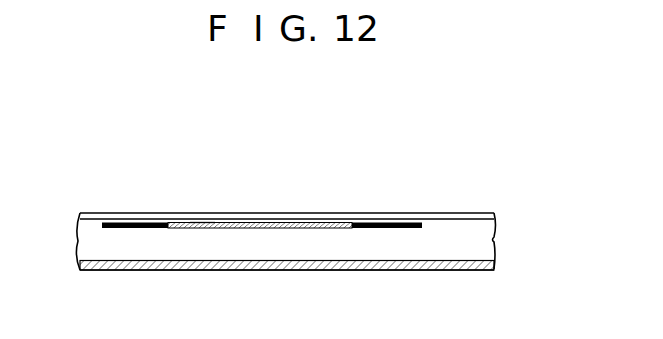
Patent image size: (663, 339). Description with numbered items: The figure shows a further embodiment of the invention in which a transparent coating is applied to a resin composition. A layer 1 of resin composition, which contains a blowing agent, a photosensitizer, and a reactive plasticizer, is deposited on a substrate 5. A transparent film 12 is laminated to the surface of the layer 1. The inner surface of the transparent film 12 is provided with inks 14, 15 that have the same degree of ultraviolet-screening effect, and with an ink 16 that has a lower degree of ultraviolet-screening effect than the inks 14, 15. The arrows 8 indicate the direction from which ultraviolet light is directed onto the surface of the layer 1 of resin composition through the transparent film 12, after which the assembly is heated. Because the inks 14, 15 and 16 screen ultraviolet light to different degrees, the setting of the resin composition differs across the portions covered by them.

The layer of resin composition 1 is at (494, 241).
The substrate 5 is at (458, 270).
The incident light / ion beam 8 is at (135, 87).
The transparent film 12 is at (462, 219).
The ink 14 is at (140, 221).
The ink 15 is at (201, 221).
The ink 16 is at (288, 221).